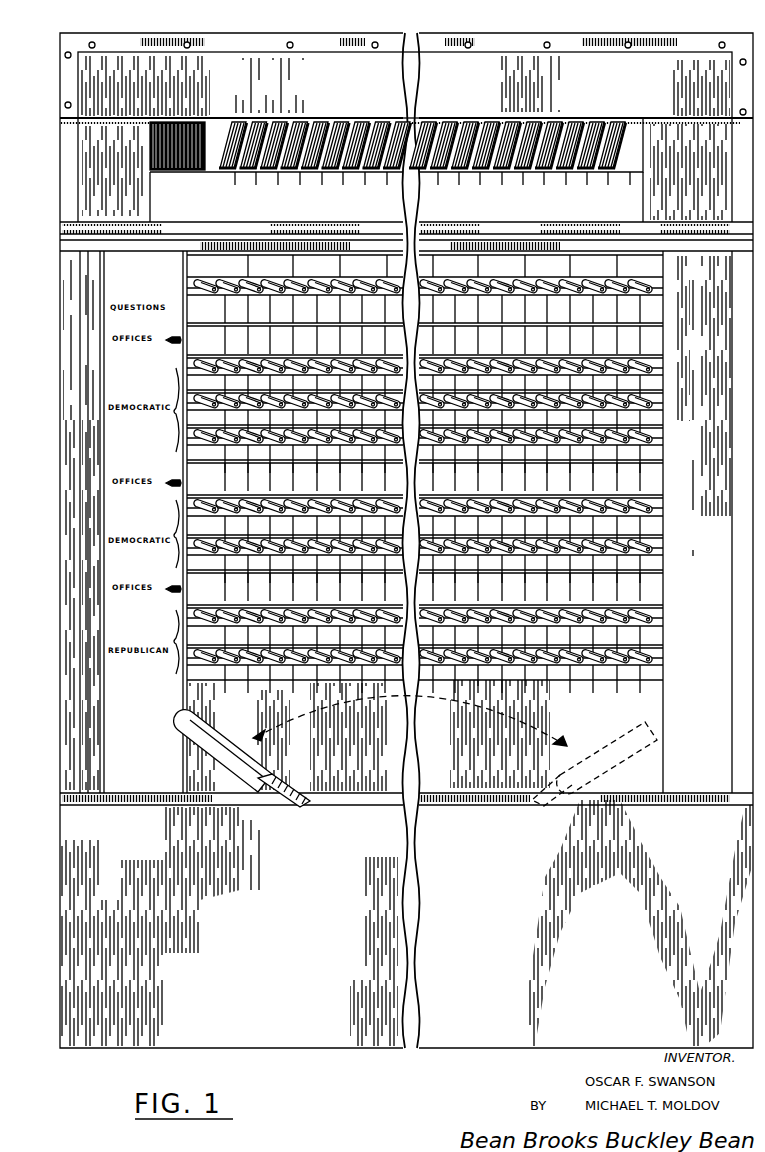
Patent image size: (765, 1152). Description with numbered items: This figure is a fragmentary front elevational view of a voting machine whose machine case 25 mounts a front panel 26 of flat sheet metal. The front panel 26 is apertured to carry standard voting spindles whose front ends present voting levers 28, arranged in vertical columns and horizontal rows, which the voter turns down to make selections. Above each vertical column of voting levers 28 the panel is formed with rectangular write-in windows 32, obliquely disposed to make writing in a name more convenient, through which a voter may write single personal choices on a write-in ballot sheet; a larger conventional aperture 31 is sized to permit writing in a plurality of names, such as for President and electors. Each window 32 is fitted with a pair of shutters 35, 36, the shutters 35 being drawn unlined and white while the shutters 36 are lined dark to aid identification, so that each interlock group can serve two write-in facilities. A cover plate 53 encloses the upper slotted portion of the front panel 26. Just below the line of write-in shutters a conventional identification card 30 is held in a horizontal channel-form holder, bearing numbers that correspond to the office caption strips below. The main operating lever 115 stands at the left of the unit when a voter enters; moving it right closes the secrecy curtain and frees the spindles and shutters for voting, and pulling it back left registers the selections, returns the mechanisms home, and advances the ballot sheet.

The machine case 25 is at (51, 393).
The front panel 26 is at (78, 129).
The voting levers 28 is at (196, 290).
The identification card 30 is at (201, 207).
The front panel aperture 31 is at (185, 121).
The write-in windows 32 is at (627, 122).
The write-in shutter 35 is at (229, 121).
The write-in shutter 36 is at (252, 121).
The cover plate 53 is at (128, 72).
The main operating lever 115 is at (180, 735).